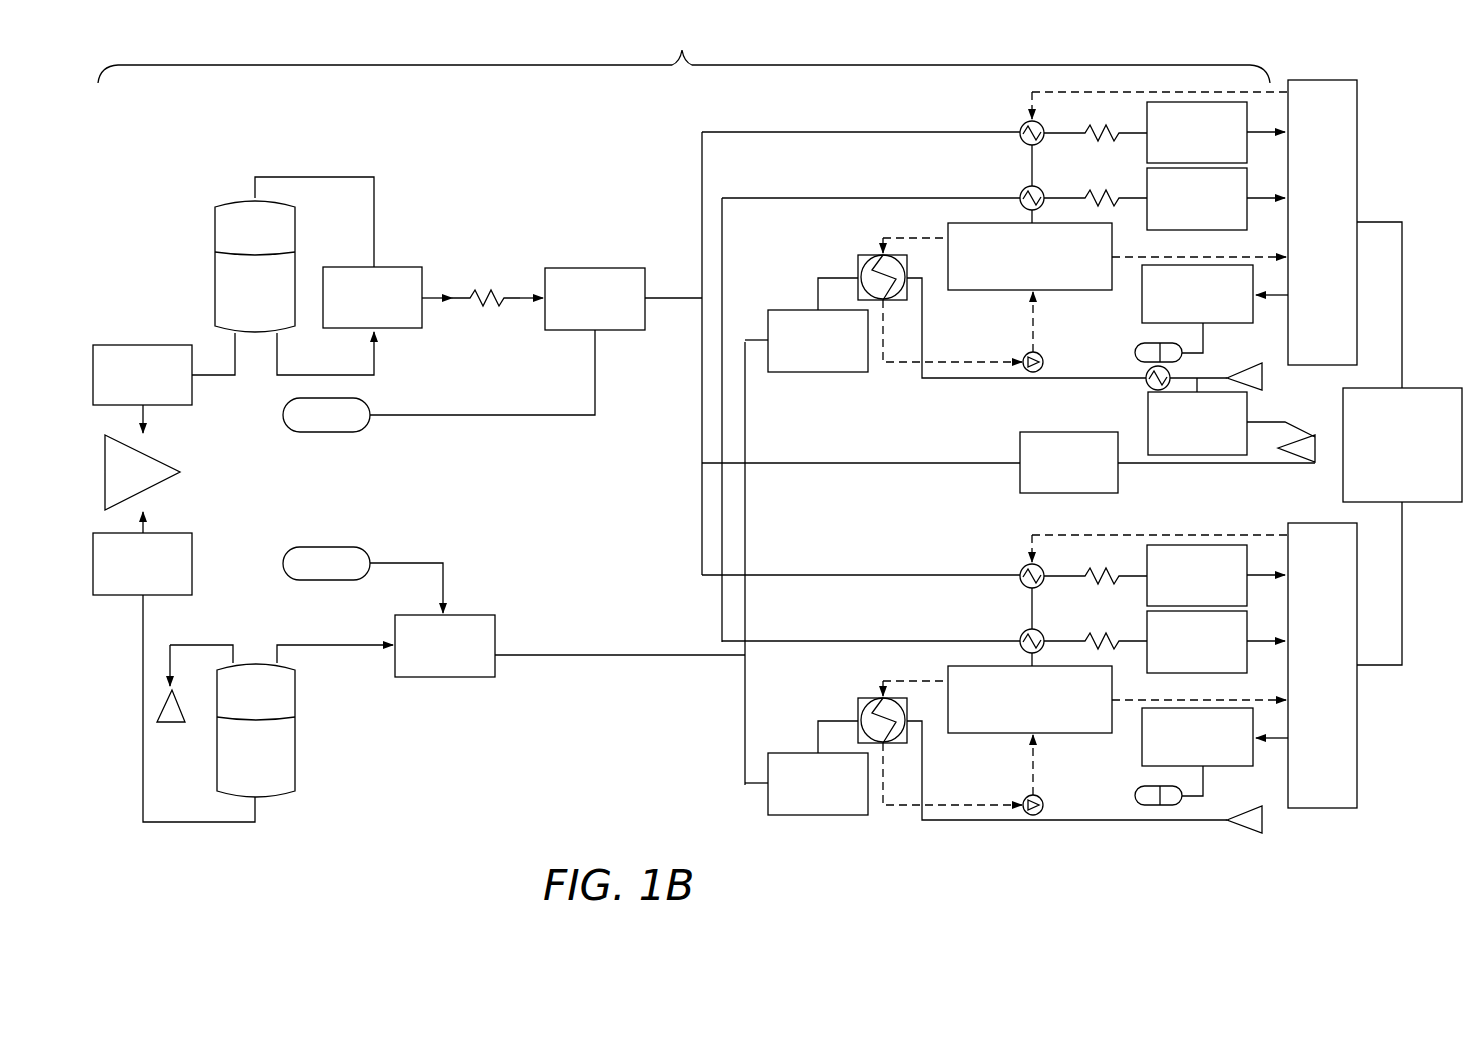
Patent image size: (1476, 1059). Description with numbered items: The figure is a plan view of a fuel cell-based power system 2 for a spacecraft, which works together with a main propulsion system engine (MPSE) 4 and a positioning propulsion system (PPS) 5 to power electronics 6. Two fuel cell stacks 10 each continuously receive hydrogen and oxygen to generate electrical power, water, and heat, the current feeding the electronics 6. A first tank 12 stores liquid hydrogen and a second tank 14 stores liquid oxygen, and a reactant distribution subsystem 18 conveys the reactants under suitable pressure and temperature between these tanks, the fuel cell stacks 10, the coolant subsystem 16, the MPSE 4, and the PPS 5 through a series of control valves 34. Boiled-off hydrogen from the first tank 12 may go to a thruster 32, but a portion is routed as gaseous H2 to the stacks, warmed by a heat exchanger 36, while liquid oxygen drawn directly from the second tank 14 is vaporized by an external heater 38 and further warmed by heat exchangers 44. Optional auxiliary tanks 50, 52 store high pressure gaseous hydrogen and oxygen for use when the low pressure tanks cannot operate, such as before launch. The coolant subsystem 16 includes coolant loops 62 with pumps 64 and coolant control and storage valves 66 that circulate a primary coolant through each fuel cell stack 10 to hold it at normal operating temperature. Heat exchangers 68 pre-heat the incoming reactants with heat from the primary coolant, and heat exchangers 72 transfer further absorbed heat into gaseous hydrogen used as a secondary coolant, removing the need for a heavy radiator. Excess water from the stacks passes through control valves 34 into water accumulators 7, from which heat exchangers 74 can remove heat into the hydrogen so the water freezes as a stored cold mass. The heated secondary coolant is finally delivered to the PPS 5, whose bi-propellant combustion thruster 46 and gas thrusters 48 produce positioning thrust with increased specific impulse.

The fuel cell-based power system 2 is at (518, 799).
The main propulsion system engine (MPSE) 4 is at (160, 465).
The positioning propulsion system (PPS) 5 is at (172, 726).
The electronics 6 is at (1402, 388).
The water accumulators 7 is at (1135, 352).
The fuel cell stacks 10 is at (1357, 142).
The first tank 12 is at (295, 760).
The second tank 14 is at (215, 226).
The coolant subsystem 16 is at (940, 268).
The reactant distribution subsystem 18 is at (684, 55).
The thruster 32 is at (178, 704).
The control valves 34 is at (412, 267).
The heat exchanger 36 is at (1090, 198).
The heater 38 is at (488, 298).
The heat exchangers 44 is at (1090, 133).
The bi-propellant combustion thruster 46 is at (1318, 445).
The gas thrusters 48 is at (1262, 368).
The first auxiliary tank 50 is at (330, 547).
The second auxiliary tank 52 is at (328, 432).
The coolant loops 62 is at (1140, 258).
The pumps 64 is at (1044, 360).
The coolant control and storage valves 66 is at (995, 290).
The heat exchangers 68 is at (1022, 125).
The heat exchangers 72 is at (858, 265).
The heat exchangers 74 is at (1149, 384).